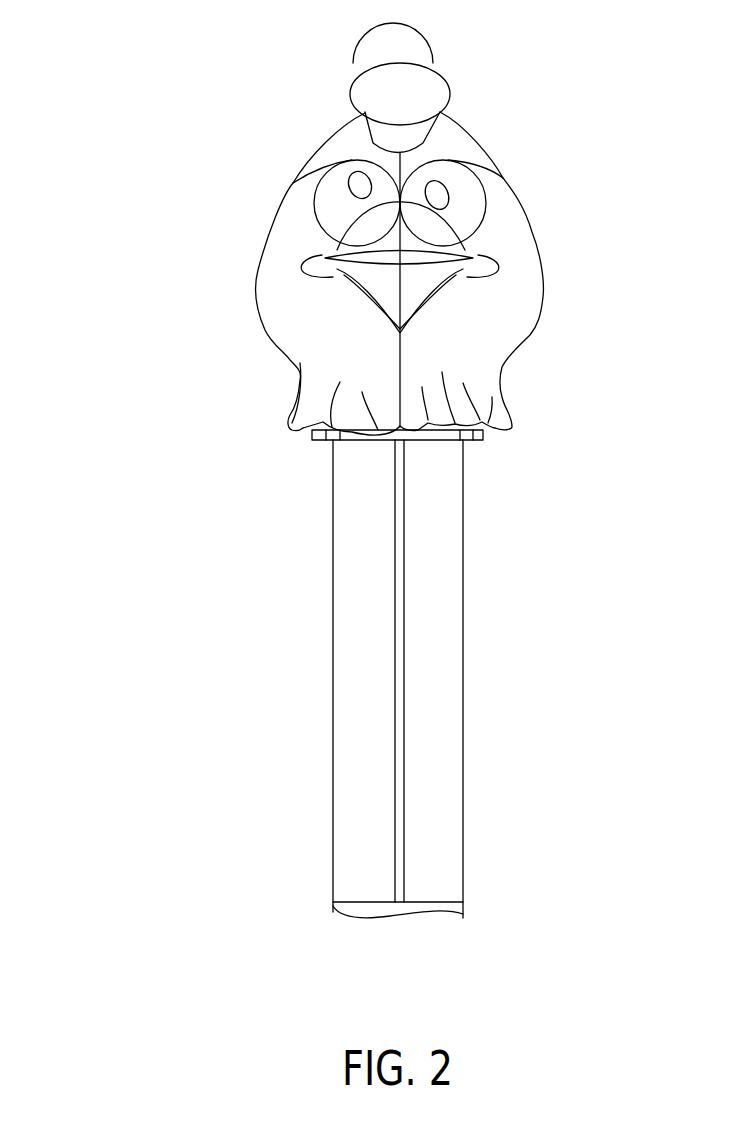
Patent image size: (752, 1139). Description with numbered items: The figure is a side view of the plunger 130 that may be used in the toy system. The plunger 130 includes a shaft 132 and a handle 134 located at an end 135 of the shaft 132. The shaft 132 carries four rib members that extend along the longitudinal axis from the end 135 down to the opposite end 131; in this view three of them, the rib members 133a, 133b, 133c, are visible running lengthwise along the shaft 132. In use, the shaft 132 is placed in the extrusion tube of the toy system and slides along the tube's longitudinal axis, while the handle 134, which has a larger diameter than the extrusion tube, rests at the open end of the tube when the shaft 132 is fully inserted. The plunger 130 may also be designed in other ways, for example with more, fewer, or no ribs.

The plunger 130 is at (108, 158).
The end of the shaft 131 is at (353, 910).
The shaft 132 is at (447, 530).
The rib member 133a is at (332, 638).
The rib member 133b is at (400, 723).
The rib member 133c is at (463, 680).
The handle 134 is at (560, 180).
The end of the shaft 135 is at (316, 460).